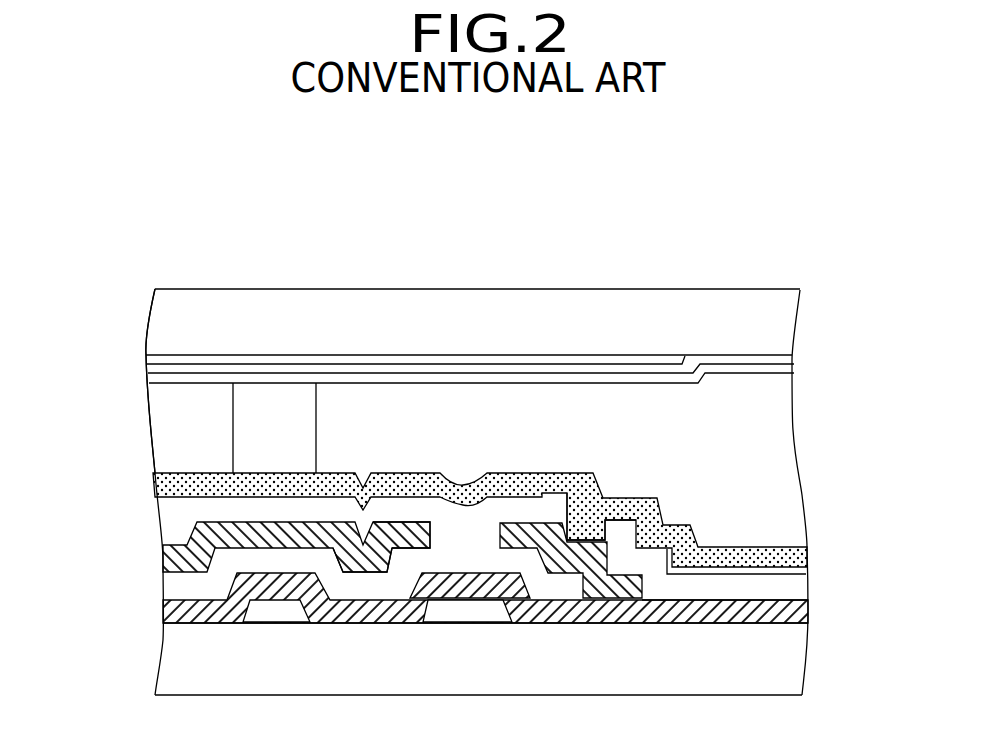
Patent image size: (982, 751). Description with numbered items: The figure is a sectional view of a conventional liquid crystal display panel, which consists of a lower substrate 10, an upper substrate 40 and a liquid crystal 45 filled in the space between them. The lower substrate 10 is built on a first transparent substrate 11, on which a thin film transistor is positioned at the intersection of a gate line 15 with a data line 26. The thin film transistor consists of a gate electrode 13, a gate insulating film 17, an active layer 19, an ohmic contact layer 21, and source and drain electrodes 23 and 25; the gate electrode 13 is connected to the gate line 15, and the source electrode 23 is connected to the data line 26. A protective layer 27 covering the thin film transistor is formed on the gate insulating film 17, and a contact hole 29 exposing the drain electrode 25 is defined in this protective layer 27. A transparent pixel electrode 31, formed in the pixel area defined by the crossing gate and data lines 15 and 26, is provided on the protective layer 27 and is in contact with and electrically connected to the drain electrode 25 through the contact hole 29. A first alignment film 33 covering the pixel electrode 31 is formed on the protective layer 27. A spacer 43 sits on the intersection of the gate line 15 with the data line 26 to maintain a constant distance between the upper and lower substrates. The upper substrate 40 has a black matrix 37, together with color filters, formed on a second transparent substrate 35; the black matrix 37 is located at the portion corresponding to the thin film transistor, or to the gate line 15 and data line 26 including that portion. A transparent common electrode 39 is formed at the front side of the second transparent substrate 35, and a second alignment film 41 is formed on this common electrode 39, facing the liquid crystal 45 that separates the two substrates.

The lower substrate 10 is at (140, 633).
The first transparent substrate 11 is at (157, 660).
The gate electrode 13 is at (470, 615).
The gate line 15 is at (278, 615).
The gate insulating film 17 is at (806, 611).
The active layer 19 is at (562, 588).
The ohmic contact layer 21 is at (363, 575).
The source electrode 23 is at (408, 549).
The drain electrode 25 is at (628, 598).
The data line 26 is at (165, 558).
The protective layer 27 is at (747, 588).
The contact hole 29 is at (594, 513).
The pixel electrode 31 is at (807, 573).
The first alignment film 33 is at (800, 552).
The second transparent substrate 35 is at (608, 300).
The black matrix 37 is at (658, 362).
The common electrode 39 is at (786, 356).
The upper substrate 40 is at (135, 358).
The second alignment film 41 is at (714, 372).
The spacer 43 is at (316, 432).
The liquid crystal 45 is at (213, 434).